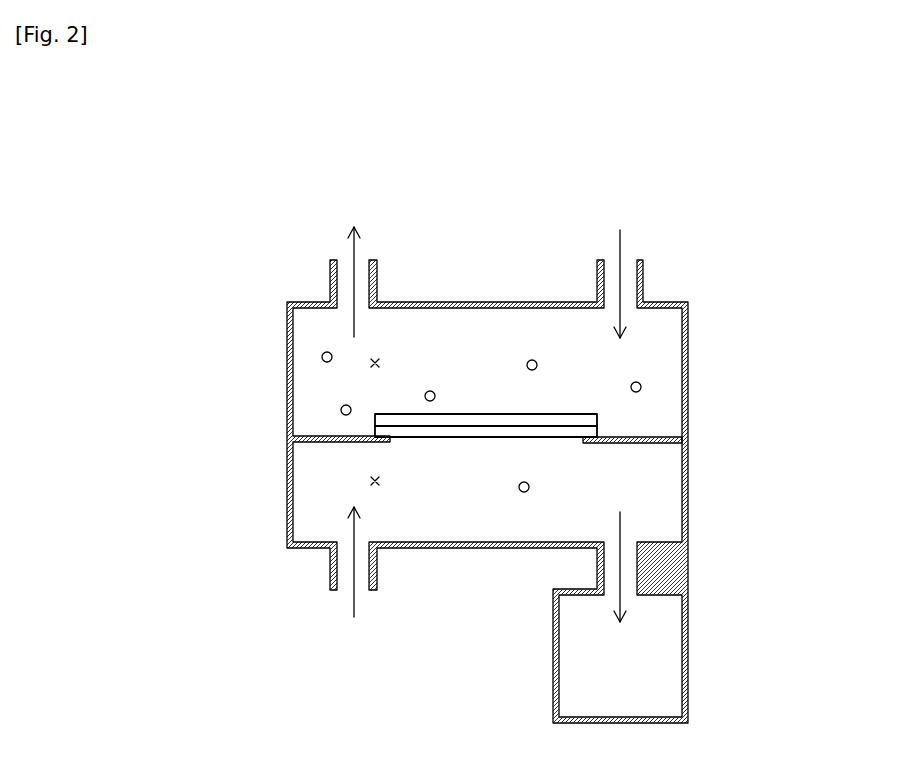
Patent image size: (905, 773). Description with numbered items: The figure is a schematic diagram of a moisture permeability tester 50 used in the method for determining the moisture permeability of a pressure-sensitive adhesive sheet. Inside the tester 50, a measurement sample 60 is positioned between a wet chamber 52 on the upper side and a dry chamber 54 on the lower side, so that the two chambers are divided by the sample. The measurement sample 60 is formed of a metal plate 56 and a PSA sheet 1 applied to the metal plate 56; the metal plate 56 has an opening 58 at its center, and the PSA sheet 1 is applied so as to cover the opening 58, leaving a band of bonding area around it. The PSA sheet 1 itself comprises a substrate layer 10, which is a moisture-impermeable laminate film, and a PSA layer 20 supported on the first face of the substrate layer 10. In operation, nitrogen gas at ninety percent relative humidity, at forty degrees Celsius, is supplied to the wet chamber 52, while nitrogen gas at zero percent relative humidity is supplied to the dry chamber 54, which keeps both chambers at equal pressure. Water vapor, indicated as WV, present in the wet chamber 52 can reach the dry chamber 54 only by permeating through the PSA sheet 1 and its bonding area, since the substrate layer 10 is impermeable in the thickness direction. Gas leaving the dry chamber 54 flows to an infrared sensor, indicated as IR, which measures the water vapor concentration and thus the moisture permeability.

The moisture permeability tester 50 is at (692, 278).
The wet chamber 52 is at (372, 364).
The dry chamber 54 is at (372, 481).
The opening 58 is at (453, 445).
The PSA sheet 1 is at (576, 385).
The substrate layer 10 is at (598, 417).
The PSA layer 20 is at (598, 428).
The metal plate 56 is at (647, 446).
The measurement sample 60 is at (582, 416).